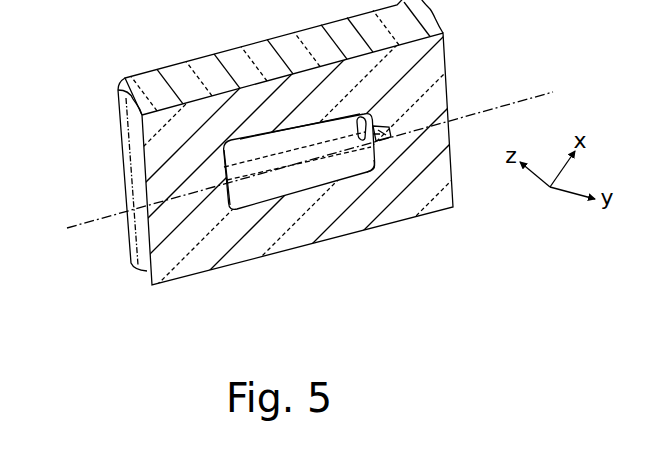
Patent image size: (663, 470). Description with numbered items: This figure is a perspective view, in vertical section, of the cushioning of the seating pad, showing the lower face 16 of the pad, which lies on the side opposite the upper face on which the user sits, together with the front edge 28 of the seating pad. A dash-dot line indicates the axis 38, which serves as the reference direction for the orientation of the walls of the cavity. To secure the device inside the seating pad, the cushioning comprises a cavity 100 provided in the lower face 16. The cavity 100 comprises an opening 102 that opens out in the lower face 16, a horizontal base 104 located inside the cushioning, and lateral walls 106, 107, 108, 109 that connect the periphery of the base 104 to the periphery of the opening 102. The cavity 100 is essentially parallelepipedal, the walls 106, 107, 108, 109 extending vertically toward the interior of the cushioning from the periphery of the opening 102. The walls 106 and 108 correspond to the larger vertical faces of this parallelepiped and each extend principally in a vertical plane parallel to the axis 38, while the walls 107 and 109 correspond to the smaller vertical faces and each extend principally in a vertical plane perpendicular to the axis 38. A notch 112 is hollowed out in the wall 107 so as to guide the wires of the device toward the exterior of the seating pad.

The lower face 16 is at (172, 245).
The front edge 28 is at (137, 165).
The axis 38 is at (513, 102).
The cavity 100 is at (493, 298).
The opening 102 is at (274, 142).
The horizontal base 104 is at (340, 169).
The lateral wall 106 is at (353, 126).
The lateral wall 107 is at (376, 173).
The lateral wall 108 is at (296, 147).
The lateral wall 109 is at (233, 175).
The notch 112 is at (403, 138).